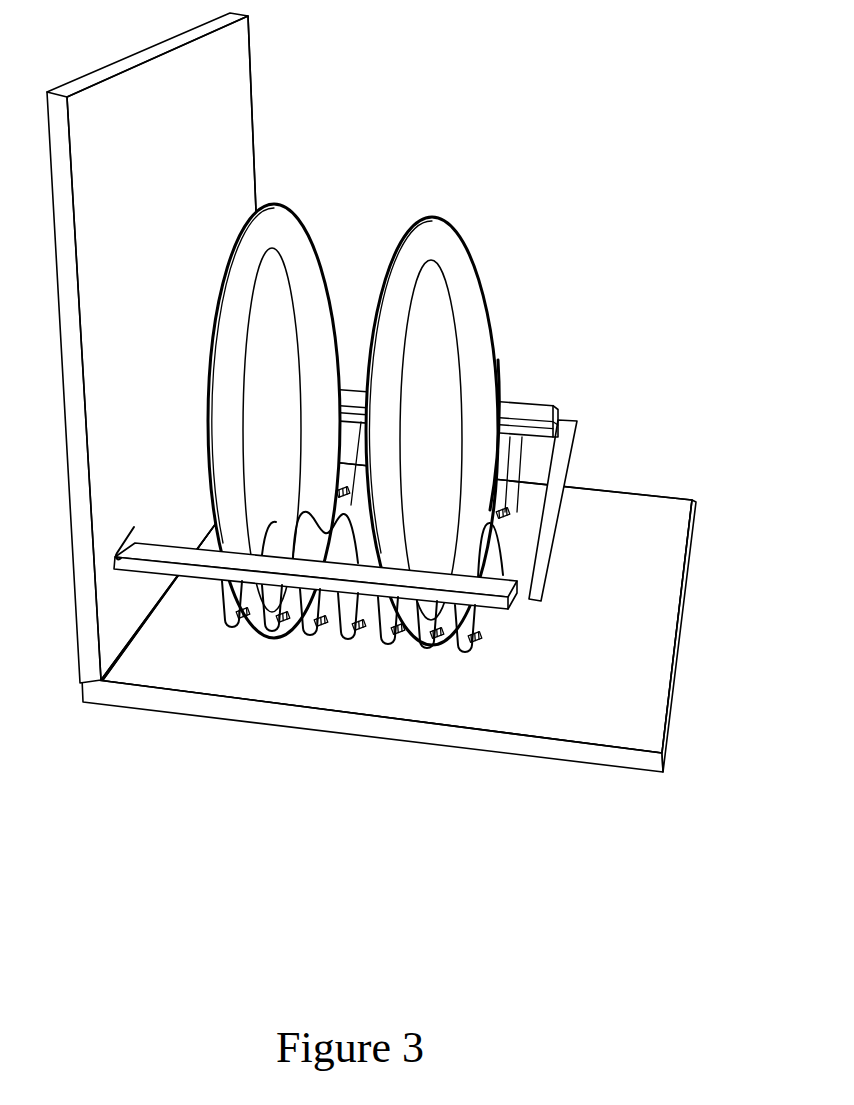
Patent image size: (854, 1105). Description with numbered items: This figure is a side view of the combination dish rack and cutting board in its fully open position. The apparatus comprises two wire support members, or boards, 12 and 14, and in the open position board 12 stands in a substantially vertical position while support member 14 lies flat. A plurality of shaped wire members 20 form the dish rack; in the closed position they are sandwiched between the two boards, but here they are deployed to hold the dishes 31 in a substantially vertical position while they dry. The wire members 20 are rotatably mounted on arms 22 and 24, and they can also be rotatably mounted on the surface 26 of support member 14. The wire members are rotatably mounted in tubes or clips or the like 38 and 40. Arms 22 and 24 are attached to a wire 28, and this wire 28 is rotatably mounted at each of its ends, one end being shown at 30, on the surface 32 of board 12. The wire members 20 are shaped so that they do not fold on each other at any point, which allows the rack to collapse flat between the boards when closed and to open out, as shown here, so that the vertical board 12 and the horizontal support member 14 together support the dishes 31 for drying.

The wire support member 12 is at (213, 107).
The wire support member 14 is at (662, 590).
The wire members 20 is at (335, 624).
The arm 22 is at (497, 367).
The arm 24 is at (460, 636).
The surface 26 is at (586, 625).
The wire 28 is at (578, 462).
The end of wire 30 is at (116, 545).
The dishes 31 is at (417, 213).
The surface 32 is at (180, 262).
The clip 38 is at (516, 511).
The clip 40 is at (322, 628).